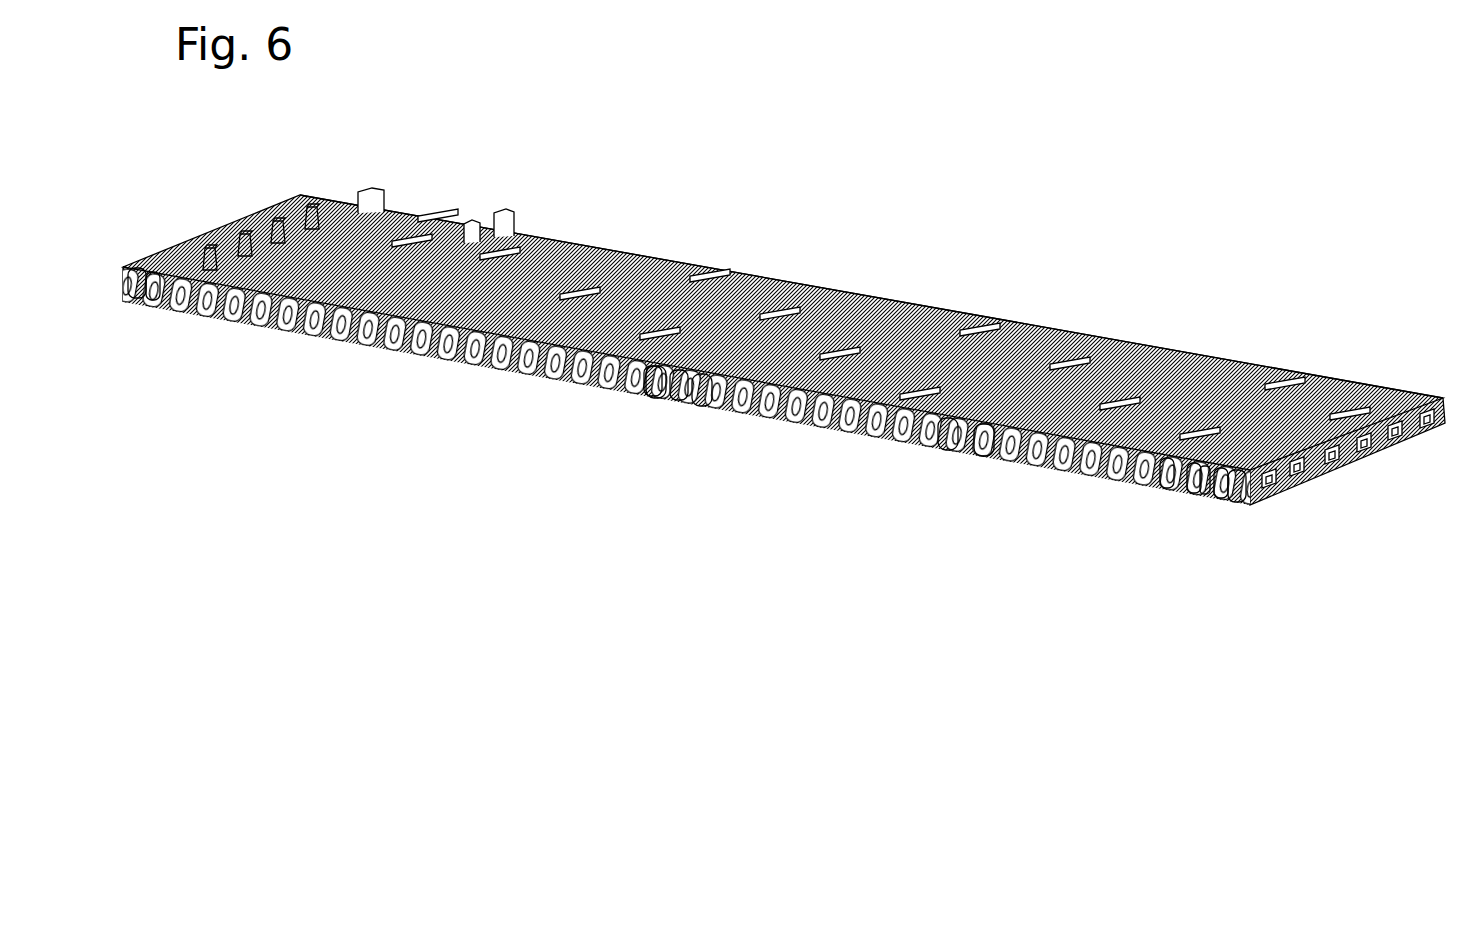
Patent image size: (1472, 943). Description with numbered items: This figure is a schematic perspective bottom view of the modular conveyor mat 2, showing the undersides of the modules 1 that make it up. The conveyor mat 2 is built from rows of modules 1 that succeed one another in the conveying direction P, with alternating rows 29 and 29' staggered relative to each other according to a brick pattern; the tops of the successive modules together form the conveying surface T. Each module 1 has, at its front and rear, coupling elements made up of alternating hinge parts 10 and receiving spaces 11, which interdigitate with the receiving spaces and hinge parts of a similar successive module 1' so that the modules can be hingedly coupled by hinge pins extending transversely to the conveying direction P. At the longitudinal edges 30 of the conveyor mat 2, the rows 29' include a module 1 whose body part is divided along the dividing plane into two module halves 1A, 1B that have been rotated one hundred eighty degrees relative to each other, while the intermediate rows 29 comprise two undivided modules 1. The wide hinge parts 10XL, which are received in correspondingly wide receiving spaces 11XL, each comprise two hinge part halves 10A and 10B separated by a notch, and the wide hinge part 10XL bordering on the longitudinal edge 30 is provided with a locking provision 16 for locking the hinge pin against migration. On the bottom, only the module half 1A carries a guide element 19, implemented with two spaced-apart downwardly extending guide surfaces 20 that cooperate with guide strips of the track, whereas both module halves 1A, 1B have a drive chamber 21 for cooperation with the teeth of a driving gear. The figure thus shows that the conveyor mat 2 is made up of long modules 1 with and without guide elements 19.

The module 1 is at (797, 350).
The similar successive module 1' is at (1428, 450).
The module half 1A is at (268, 325).
The module half 1B is at (1092, 472).
The modular conveyor mat 2 is at (316, 366).
The hinge part 10 is at (160, 310).
The hinge part half 10A is at (680, 398).
The hinge part half 10B is at (655, 396).
The wide hinge part 10XL is at (658, 408).
The receiving space 11 is at (1185, 492).
The wide receiving space 11XL is at (128, 283).
The locking provision 16 is at (1370, 456).
The guide element 19 is at (380, 194).
The guide surface 20 is at (517, 224).
The drive chamber 21 is at (436, 216).
The intermediate row 29 is at (1307, 512).
The row with divided module 29' is at (1367, 492).
The longitudinal edge 30 is at (302, 196).
The conveying direction P is at (268, 190).
The conveying surface T is at (558, 386).